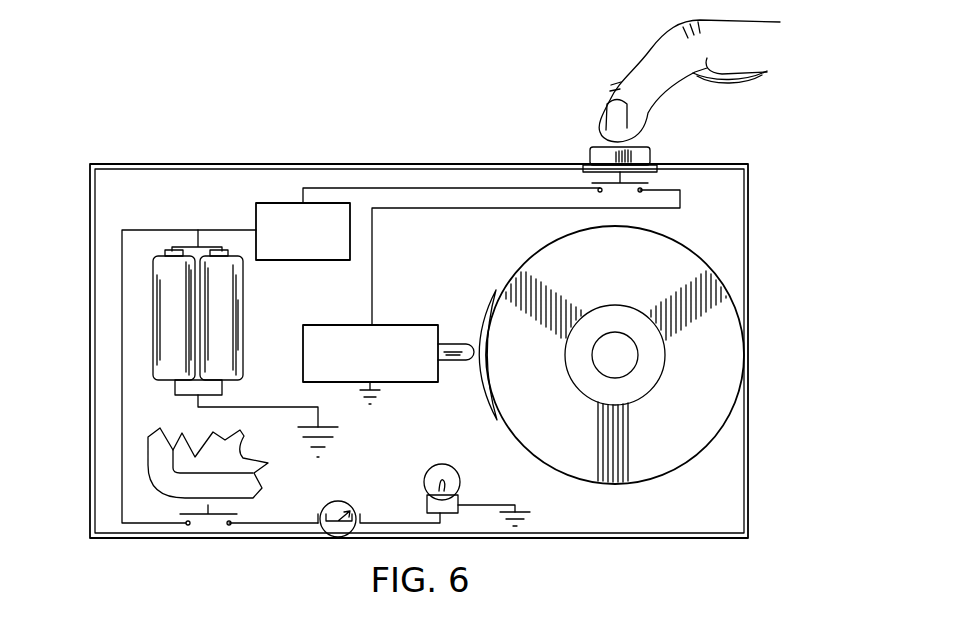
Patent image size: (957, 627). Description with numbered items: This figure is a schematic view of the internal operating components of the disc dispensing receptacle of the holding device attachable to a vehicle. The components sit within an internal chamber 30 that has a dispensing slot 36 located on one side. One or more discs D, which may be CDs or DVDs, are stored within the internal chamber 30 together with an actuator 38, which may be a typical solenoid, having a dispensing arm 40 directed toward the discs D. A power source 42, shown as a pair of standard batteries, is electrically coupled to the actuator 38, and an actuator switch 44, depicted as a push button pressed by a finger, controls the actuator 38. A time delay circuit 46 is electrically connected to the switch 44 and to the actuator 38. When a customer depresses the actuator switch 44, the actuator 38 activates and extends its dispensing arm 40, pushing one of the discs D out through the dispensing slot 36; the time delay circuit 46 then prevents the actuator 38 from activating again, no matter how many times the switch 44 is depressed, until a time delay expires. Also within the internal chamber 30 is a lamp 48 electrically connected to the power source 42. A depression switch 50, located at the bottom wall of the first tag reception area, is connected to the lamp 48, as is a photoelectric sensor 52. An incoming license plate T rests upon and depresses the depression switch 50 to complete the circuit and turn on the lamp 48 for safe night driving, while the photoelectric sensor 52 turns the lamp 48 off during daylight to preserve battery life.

The internal chamber 30 is at (703, 490).
The dispensing slot 36 is at (748, 272).
The actuator 38 is at (400, 338).
The dispensing arm 40 is at (460, 350).
The power source 42 is at (170, 330).
The actuator switch 44 is at (645, 152).
The time delay circuit 46 is at (270, 220).
The lamp 48 is at (448, 510).
The depression switch 50 is at (203, 525).
The photoelectric sensor 52 is at (338, 525).
The license plate T is at (160, 464).
The disc D is at (735, 353).